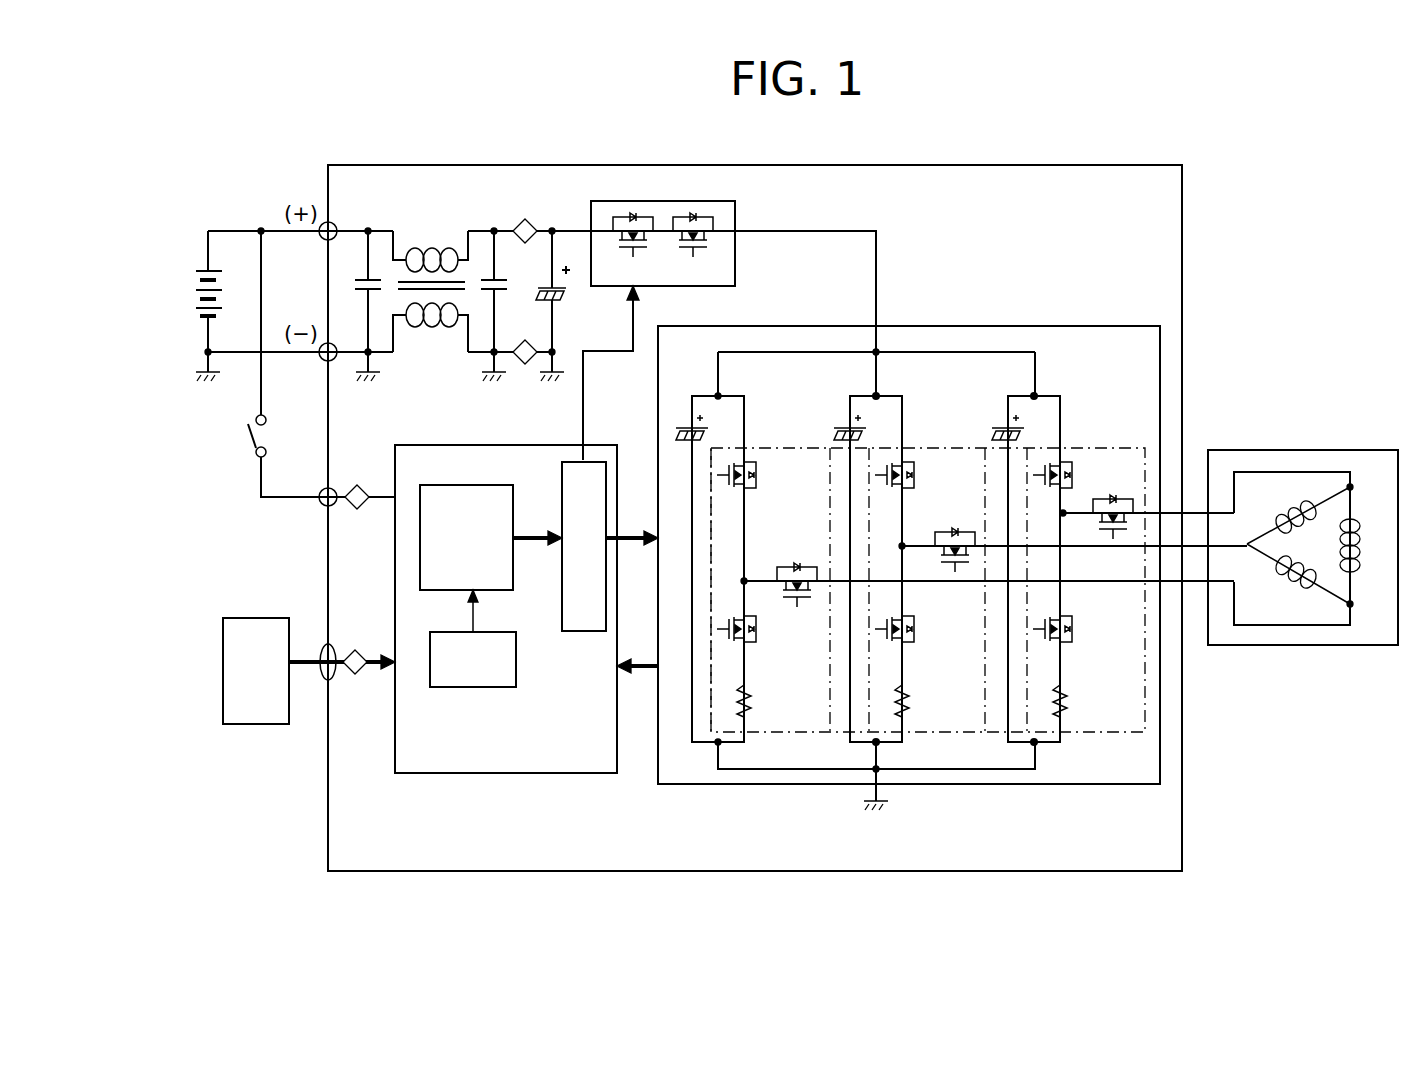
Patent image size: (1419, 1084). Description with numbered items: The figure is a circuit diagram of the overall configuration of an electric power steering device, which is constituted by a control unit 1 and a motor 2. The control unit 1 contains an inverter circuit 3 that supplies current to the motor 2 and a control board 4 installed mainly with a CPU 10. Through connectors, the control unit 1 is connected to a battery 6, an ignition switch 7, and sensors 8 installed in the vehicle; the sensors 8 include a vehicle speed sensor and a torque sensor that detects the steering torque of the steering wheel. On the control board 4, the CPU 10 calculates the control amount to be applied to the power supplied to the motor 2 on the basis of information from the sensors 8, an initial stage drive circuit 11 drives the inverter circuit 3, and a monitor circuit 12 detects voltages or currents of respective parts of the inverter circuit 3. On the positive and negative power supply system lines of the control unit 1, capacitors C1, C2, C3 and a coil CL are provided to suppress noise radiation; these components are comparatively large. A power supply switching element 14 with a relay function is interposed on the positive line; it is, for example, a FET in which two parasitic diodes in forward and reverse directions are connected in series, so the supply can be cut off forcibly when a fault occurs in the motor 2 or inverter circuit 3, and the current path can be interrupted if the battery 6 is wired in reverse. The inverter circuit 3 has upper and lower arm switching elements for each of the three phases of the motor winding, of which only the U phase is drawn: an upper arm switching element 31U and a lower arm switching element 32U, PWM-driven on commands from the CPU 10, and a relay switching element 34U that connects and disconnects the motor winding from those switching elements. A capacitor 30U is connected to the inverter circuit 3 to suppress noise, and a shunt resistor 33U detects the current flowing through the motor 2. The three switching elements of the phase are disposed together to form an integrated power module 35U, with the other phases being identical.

The control unit 1 is at (1165, 166).
The motor 2 is at (1310, 450).
The inverter circuit 3 is at (938, 784).
The control board 4 is at (397, 752).
The battery 6 is at (192, 312).
The ignition switch 7 is at (255, 462).
The sensors 8 is at (235, 724).
The CPU 10 is at (420, 516).
The initial stage drive circuit 11 is at (588, 631).
The monitor circuit 12 is at (488, 687).
The power supply switching element 14 is at (645, 200).
The capacitor C1 is at (360, 275).
The capacitor C2 is at (506, 240).
The capacitor C3 is at (575, 240).
The coil CL is at (420, 235).
The capacitor 30U is at (680, 425).
The switching element 31U is at (757, 462).
The switching element 32U is at (757, 632).
The shunt resistor 33U is at (750, 705).
The relay switching element 34U is at (797, 572).
The integrated power module 35U is at (744, 733).